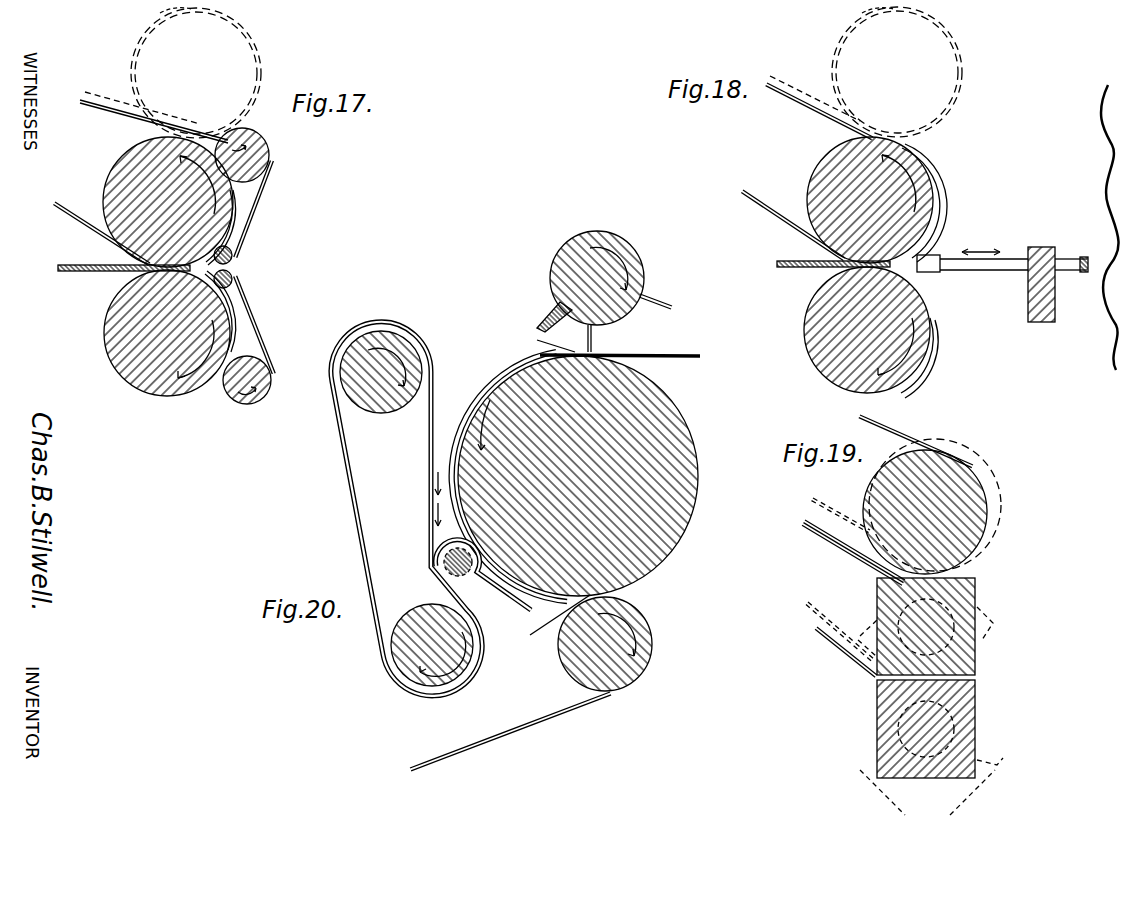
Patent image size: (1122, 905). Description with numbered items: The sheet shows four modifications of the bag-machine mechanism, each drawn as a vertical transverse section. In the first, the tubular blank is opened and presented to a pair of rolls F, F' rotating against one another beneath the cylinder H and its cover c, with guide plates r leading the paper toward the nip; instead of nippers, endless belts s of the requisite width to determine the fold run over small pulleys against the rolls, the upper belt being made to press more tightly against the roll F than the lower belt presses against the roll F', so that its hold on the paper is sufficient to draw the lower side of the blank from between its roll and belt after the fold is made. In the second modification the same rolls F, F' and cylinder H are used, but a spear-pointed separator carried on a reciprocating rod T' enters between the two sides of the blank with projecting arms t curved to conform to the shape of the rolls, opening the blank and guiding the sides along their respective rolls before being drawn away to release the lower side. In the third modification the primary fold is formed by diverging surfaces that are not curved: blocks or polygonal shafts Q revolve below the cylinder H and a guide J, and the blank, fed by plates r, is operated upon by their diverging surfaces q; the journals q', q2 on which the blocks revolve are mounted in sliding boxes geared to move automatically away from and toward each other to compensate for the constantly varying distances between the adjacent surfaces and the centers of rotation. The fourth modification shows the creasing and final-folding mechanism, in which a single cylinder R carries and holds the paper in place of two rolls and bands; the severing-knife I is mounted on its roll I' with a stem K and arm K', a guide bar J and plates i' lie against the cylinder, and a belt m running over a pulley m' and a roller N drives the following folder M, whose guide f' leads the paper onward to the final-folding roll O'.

In FIG. 17, the cylinder H is at (196, 73).
In FIG. 18, the cylinder H is at (897, 72).
In FIG. 19, the cylinder H is at (972, 516).
In FIG. 17, the cylinder cover c is at (169, 16).
In FIG. 18, the cylinder cover c is at (871, 16).
In FIG. 17, the roll F is at (155, 202).
In FIG. 18, the roll F is at (851, 200).
In FIG. 17, the roll F' is at (155, 333).
In FIG. 18, the roll F' is at (849, 330).
In FIG. 17, the guide plate r is at (140, 179).
In FIG. 18, the guide plate r is at (807, 168).
In FIG. 19, the guide plate r is at (853, 587).
In FIG. 17, the endless belts s is at (244, 266).
In FIG. 18, the projecting arms t is at (925, 271).
In FIG. 18, the sliding rod T' is at (1002, 284).
In FIG. 19, the guide bar J is at (916, 441).
In FIG. 20, the guide bar J is at (555, 551).
In FIG. 19, the blocks or polygonal shafts Q is at (958, 613).
In FIG. 19, the journal q' is at (861, 612).
In FIG. 19, the journal q2 is at (920, 732).
In FIG. 19, the diverging surfaces q is at (1002, 706).
In FIG. 20, the belt pulley m' is at (381, 385).
In FIG. 20, the belt m is at (404, 509).
In FIG. 20, the roller N is at (410, 650).
In FIG. 20, the following folder M is at (483, 575).
In FIG. 20, the guide plate f' is at (513, 614).
In FIG. 20, the guide plate i' is at (560, 490).
In FIG. 20, the inking roller I' is at (596, 273).
In FIG. 20, the severing-knife I is at (547, 317).
In FIG. 20, the arm K' is at (666, 295).
In FIG. 20, the stem K is at (598, 338).
In FIG. 20, the single cylinder R is at (667, 472).
In FIG. 20, the final-folding roll O' is at (613, 644).